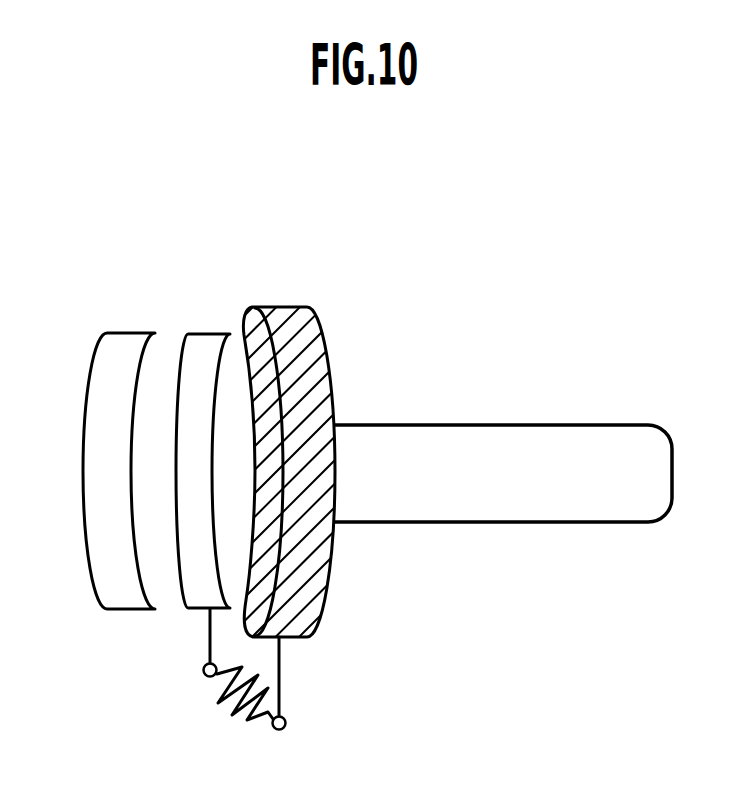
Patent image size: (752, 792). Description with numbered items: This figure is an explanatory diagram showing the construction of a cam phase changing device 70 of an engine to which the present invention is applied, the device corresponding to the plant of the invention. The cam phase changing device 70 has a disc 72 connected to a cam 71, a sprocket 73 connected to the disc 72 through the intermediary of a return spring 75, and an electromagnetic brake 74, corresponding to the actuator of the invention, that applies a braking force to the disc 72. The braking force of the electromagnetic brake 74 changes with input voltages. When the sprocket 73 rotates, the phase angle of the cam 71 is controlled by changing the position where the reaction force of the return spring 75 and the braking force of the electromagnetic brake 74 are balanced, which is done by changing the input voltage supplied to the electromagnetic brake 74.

The cam phase changing device 70 is at (548, 217).
The cam 71 is at (540, 424).
The disc 72 is at (213, 343).
The sprocket 73 is at (323, 322).
The electromagnetic brake 74 is at (100, 572).
The return spring 75 is at (218, 697).